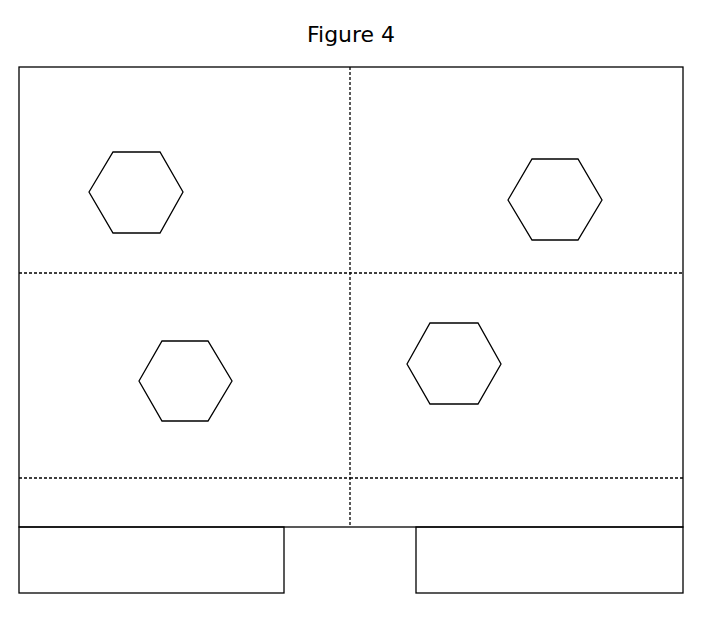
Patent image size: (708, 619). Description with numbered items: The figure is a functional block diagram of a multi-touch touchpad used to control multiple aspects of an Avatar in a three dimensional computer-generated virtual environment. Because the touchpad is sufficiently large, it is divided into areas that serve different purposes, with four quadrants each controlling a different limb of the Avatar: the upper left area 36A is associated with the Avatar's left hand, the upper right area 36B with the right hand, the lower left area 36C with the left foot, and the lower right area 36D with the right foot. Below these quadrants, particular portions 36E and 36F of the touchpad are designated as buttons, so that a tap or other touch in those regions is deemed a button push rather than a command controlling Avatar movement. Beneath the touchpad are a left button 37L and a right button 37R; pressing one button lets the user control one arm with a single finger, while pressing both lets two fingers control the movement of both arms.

The touchpad area 36A is at (202, 91).
The touchpad area 36B is at (533, 91).
The touchpad area 36C is at (202, 298).
The touchpad area 36D is at (533, 299).
The touchpad portion 36E is at (202, 510).
The touchpad portion 36F is at (533, 510).
The left button 37L is at (202, 568).
The right button 37R is at (605, 568).